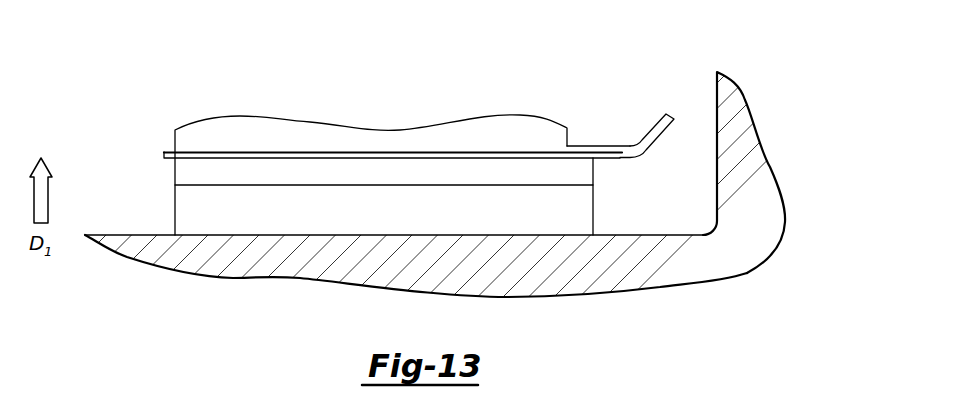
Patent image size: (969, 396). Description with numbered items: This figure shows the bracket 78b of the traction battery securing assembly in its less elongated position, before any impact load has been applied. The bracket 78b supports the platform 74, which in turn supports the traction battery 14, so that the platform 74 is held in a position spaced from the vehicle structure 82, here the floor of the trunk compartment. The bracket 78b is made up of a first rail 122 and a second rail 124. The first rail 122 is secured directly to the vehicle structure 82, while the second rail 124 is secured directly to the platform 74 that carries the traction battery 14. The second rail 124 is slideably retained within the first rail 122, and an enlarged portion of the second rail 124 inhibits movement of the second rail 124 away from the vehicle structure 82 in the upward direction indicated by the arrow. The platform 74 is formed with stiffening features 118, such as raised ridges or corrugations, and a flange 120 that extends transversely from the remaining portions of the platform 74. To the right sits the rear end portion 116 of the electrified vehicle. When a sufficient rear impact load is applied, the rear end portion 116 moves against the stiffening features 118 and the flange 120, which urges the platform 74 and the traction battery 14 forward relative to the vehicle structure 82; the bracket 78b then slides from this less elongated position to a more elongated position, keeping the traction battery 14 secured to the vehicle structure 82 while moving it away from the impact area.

The traction battery 14 is at (239, 143).
The second rail 124 is at (350, 173).
The platform 74 is at (475, 155).
The stiffening features 118 is at (600, 150).
The flange 120 is at (653, 133).
The rear end portion 116 is at (717, 190).
The vehicle structure 82 is at (143, 235).
The bracket 78b is at (230, 218).
The first rail 122 is at (538, 217).